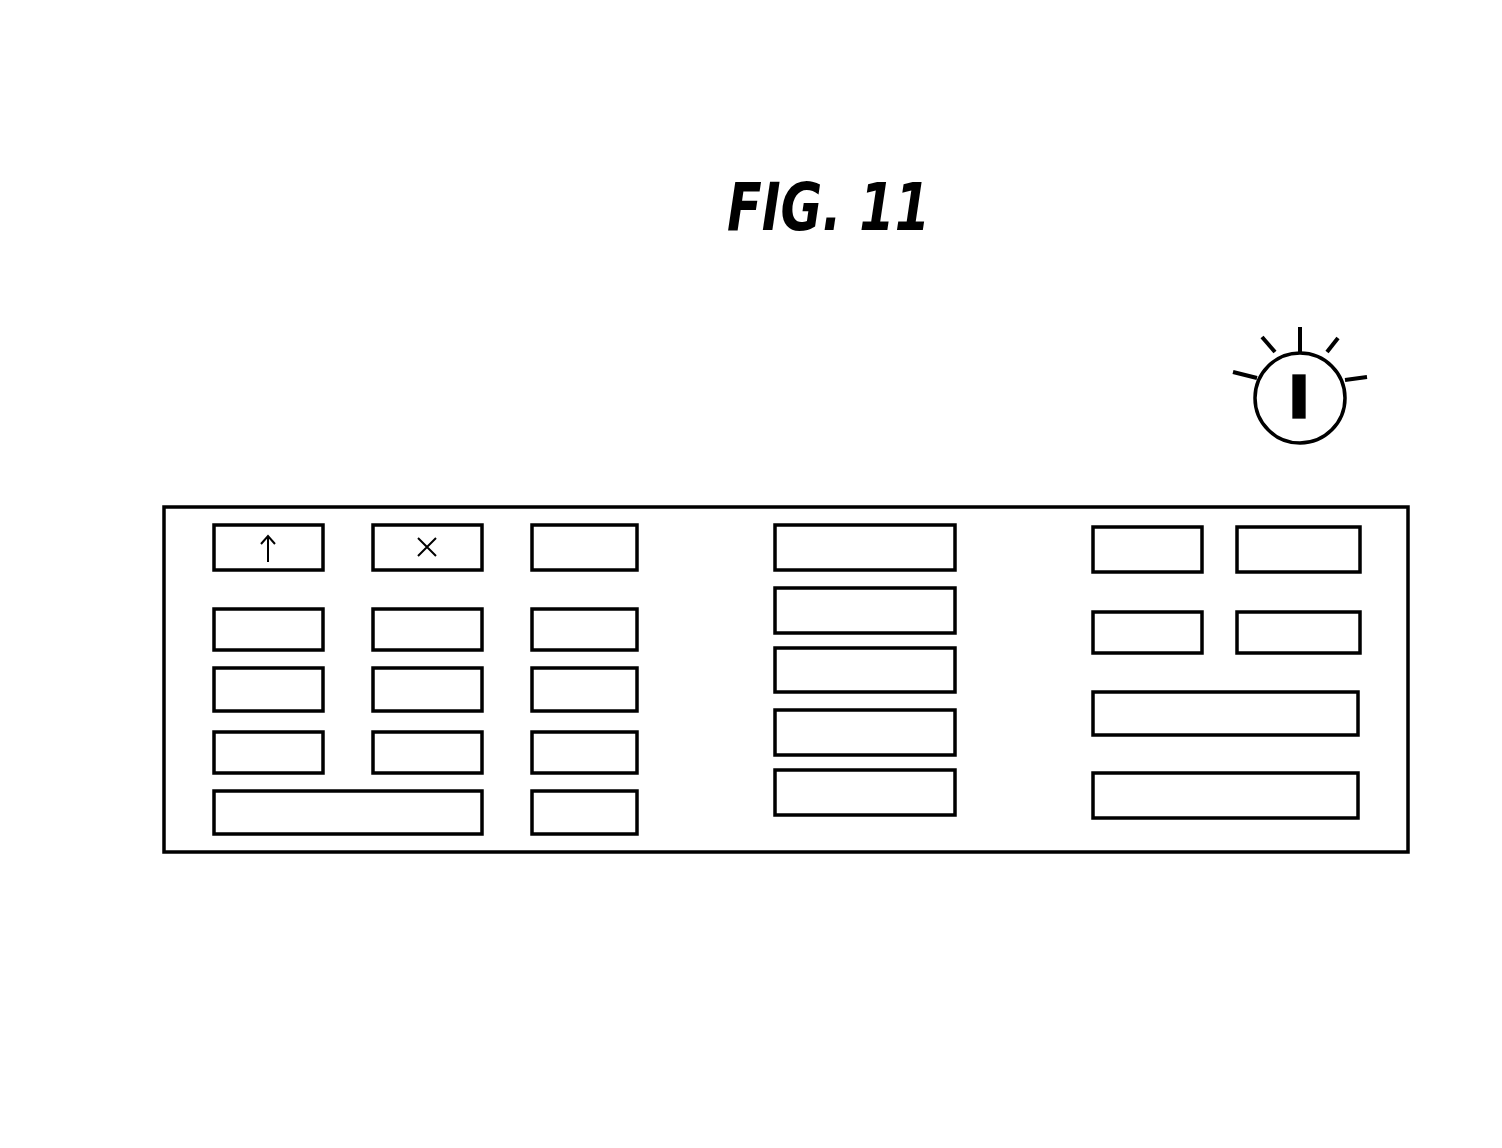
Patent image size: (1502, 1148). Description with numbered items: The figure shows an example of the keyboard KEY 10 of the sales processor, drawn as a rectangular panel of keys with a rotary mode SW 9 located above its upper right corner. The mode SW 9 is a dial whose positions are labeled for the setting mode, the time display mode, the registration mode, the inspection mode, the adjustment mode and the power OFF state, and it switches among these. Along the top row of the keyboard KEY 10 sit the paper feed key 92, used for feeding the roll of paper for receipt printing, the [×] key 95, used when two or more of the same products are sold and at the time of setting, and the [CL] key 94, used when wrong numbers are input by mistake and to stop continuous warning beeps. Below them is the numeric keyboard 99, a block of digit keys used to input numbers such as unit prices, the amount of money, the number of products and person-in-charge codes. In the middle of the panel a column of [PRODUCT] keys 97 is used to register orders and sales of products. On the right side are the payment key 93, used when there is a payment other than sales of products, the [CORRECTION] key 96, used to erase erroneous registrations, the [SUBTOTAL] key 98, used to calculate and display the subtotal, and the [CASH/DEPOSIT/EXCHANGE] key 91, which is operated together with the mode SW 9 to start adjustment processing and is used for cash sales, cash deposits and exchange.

The mode SW 9 is at (1322, 418).
The keyboard KEY 10 is at (1025, 527).
The [CASH/DEPOSIT/EXCHANGE] key 91 is at (1095, 795).
The paper feed key 92 is at (293, 538).
The payment key 93 is at (1100, 633).
The [CL] key 94 is at (612, 537).
The [×] key 95 is at (453, 537).
The [CORRECTION] key 96 is at (1355, 618).
The [PRODUCT] key 97 is at (892, 507).
The [SUBTOTAL] key 98 is at (1105, 715).
The numeric keyboard 99 is at (648, 641).